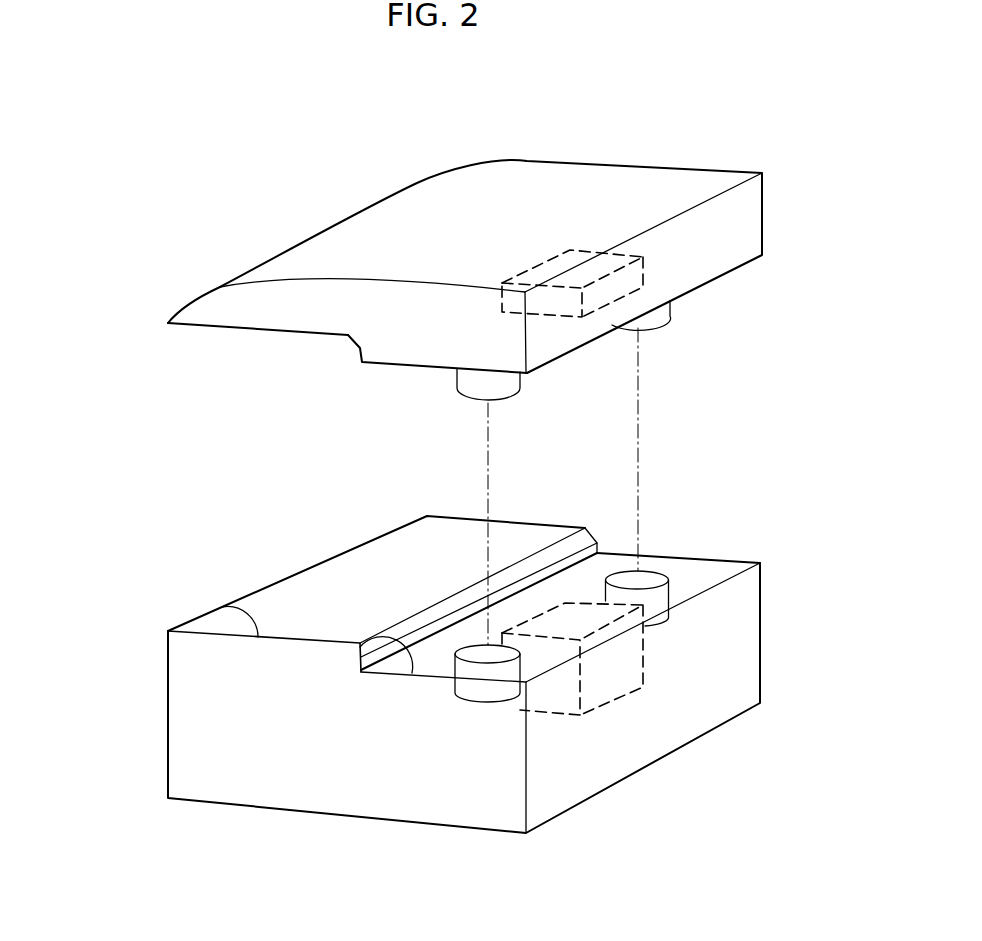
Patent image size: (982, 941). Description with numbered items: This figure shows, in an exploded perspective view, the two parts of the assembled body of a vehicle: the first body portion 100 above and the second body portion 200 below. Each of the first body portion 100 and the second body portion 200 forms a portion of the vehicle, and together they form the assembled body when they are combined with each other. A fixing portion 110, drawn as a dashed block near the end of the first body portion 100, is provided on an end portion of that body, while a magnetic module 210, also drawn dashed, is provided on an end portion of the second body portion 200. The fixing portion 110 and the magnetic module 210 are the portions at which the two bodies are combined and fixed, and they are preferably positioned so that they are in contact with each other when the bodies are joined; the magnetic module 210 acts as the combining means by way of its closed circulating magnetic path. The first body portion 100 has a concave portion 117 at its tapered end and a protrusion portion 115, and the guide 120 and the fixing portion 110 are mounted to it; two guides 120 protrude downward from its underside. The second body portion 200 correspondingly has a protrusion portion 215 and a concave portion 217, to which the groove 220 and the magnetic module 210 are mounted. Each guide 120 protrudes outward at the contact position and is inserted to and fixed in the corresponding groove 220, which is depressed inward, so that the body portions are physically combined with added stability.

The first body portion 100 is at (436, 357).
The fixing portion 110 is at (548, 260).
The protrusion portion 115 is at (395, 367).
The concave portion 117 is at (218, 330).
The guide 120 is at (460, 392).
The second body portion 200 is at (408, 691).
The magnetic module 210 is at (633, 687).
The protrusion portion 215 is at (227, 603).
The concave portion 217 is at (360, 646).
The groove 220 is at (652, 580).